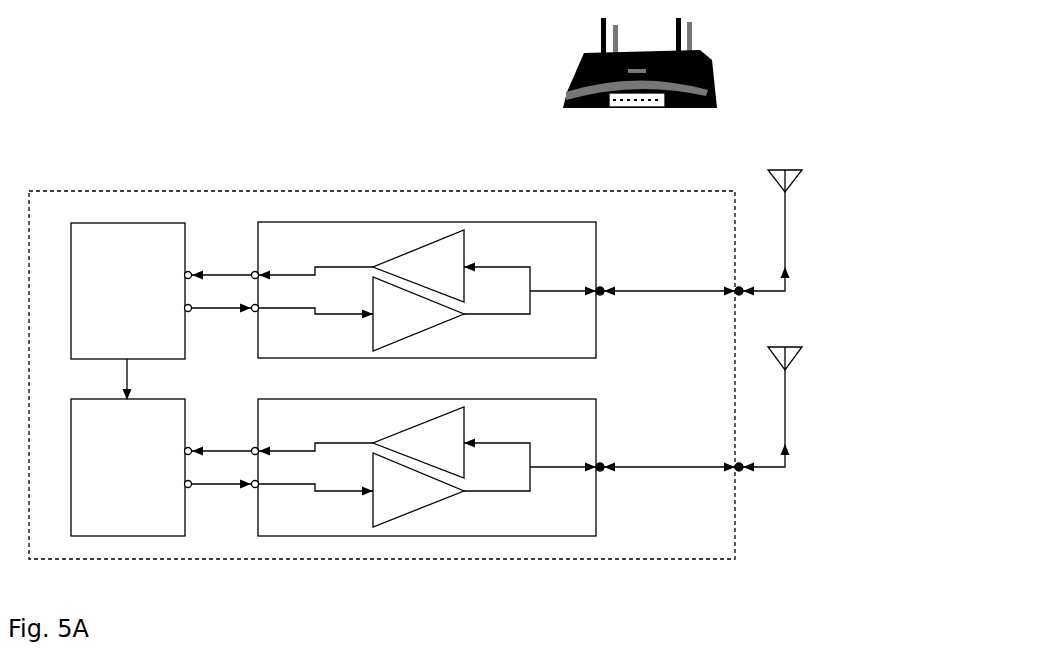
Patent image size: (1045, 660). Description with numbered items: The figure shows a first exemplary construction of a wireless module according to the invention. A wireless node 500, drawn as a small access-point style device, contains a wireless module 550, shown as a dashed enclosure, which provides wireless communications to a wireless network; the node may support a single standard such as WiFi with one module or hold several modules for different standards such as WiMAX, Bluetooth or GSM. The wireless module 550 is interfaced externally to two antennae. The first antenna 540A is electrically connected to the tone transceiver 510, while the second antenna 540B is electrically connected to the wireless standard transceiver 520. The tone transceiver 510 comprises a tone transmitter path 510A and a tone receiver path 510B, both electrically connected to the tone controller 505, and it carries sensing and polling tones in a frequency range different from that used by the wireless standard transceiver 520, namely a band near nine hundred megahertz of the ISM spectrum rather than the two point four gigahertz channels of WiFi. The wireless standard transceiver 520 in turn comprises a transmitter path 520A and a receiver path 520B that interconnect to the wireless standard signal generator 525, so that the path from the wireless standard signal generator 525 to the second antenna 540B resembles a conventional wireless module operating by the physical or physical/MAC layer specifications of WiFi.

The wireless node 500 is at (599, 98).
The wireless module 550 is at (382, 362).
The tone controller 505 is at (131, 311).
The tone transceiver 510 is at (394, 290).
The tone transmitter path 510A is at (418, 314).
The tone receiver path 510B is at (418, 266).
The wireless standard transceiver 520 is at (394, 467).
The transmitter path 520A is at (418, 490).
The receiver path 520B is at (418, 442).
The wireless standard signal generator 525 is at (131, 467).
The first antenna 540A is at (722, 233).
The second antenna 540B is at (722, 409).